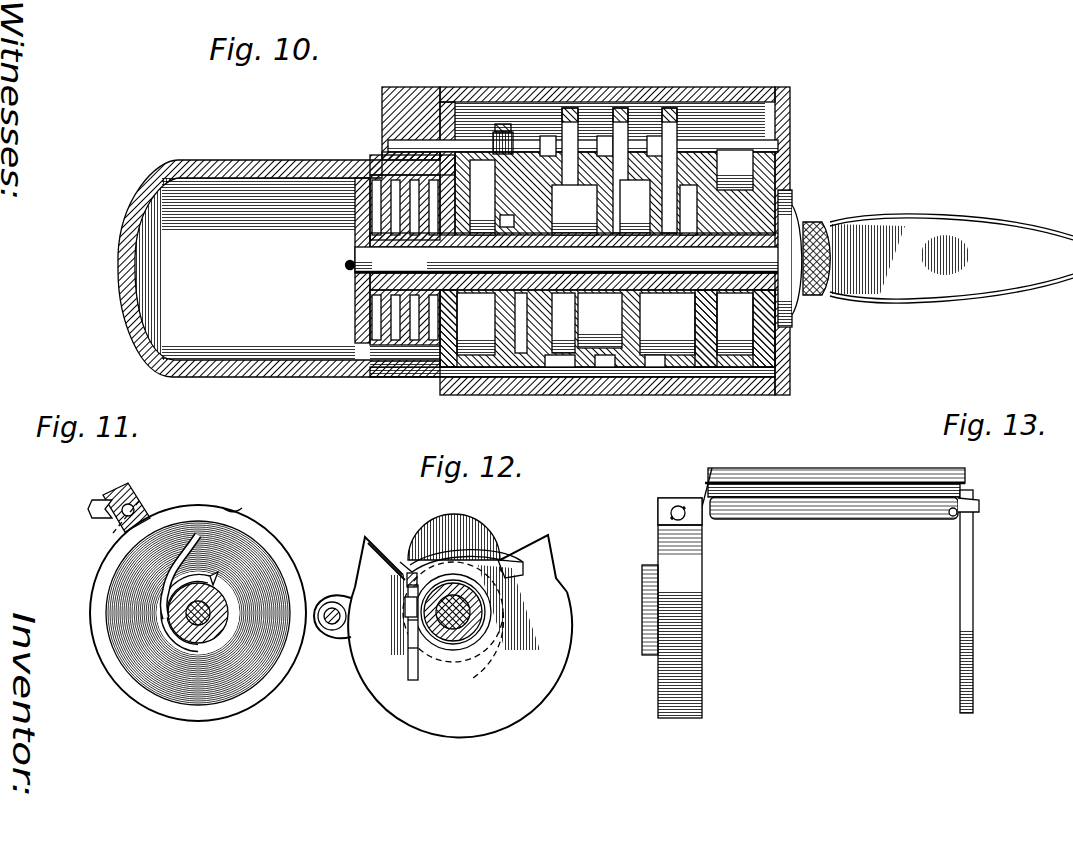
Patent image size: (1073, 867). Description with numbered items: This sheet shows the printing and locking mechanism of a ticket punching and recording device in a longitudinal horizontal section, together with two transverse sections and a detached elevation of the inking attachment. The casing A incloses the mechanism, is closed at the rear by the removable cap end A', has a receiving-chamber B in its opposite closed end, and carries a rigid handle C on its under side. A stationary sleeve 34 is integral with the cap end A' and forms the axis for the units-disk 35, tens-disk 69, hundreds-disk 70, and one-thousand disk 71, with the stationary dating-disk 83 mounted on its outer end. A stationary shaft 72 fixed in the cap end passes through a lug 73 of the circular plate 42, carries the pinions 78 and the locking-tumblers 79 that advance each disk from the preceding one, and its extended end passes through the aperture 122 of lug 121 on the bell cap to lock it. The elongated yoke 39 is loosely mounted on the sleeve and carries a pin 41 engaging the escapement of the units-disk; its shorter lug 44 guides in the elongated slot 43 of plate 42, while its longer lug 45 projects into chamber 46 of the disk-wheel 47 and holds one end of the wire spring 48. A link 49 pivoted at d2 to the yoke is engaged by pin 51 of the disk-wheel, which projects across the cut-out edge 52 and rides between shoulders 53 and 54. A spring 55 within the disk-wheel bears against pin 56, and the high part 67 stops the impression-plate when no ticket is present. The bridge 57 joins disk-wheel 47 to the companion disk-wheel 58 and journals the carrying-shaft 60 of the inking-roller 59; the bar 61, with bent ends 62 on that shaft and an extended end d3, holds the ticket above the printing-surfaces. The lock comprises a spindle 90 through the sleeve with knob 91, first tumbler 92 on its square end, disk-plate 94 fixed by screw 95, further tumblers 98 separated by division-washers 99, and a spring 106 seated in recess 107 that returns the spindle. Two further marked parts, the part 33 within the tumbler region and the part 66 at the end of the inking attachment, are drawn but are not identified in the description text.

In FIG. 10, the shoulder 33 is at (482, 197).
In FIG. 10, the stationary sleeve 34 is at (357, 290).
In FIG. 11, the stationary sleeve 34 is at (213, 628).
In FIG. 12, the stationary sleeve 34 is at (482, 620).
In FIG. 10, the units-disk 35 is at (557, 363).
In FIG. 10, the elongated yoke 39 is at (523, 317).
In FIG. 12, the elongated yoke 39 is at (488, 558).
In FIG. 12, the pin 41 is at (453, 640).
In FIG. 12, the circular plate 42 is at (452, 718).
In FIG. 12, the elongated slot 43 is at (413, 670).
In FIG. 10, the shorter lug 44 is at (494, 225).
In FIG. 12, the shorter lug 44 is at (410, 627).
In FIG. 12, the longer lug 45 is at (407, 582).
In FIG. 10, the chamber 46 is at (488, 345).
In FIG. 11, the chamber 46 is at (148, 673).
In FIG. 10, the disk-wheel 47 is at (435, 378).
In FIG. 11, the disk-wheel 47 is at (227, 713).
In FIG. 13, the disk-wheel 47 is at (692, 667).
In FIG. 10, the wire spring 48 is at (476, 324).
In FIG. 12, the wire spring 48 is at (463, 640).
In FIG. 12, the link 49 is at (520, 560).
In FIG. 11, the pin 51 is at (132, 602).
In FIG. 12, the pin 51 is at (507, 570).
In FIG. 12, the cut-out edge 52 is at (382, 540).
In FIG. 12, the shoulder 53 is at (388, 572).
In FIG. 12, the shoulder 54 is at (530, 552).
In FIG. 11, the spring 55 is at (165, 628).
In FIG. 11, the pin 56 is at (197, 540).
In FIG. 11, the bridge 57 is at (115, 492).
In FIG. 13, the bridge 57 is at (813, 482).
In FIG. 10, the companion disk-wheel 58 is at (760, 372).
In FIG. 13, the companion disk-wheel 58 is at (962, 668).
In FIG. 11, the inking-roller 59 is at (113, 533).
In FIG. 13, the inking-roller 59 is at (847, 520).
In FIG. 11, the carrying-shaft 60 is at (133, 506).
In FIG. 13, the carrying-shaft 60 is at (692, 500).
In FIG. 11, the bar 61 is at (90, 508).
In FIG. 13, the bar 61 is at (798, 498).
In FIG. 11, the bent ends 62 is at (105, 525).
In FIG. 11, the lug 66 is at (98, 518).
In FIG. 13, the lug 66 is at (748, 500).
In FIG. 11, the high part 67 is at (233, 508).
In FIG. 13, the high part 67 is at (670, 500).
In FIG. 10, the tens-disk 69 is at (600, 372).
In FIG. 10, the hundreds-disk 70 is at (653, 365).
In FIG. 10, the one-thousand disk 71 is at (700, 365).
In FIG. 10, the stationary shaft 72 is at (728, 138).
In FIG. 12, the stationary shaft 72 is at (341, 622).
In FIG. 10, the lug 73 is at (505, 122).
In FIG. 12, the lug 73 is at (320, 630).
In FIG. 10, the pinions 78 is at (627, 110).
In FIG. 10, the locking-tumblers 79 is at (568, 110).
In FIG. 10, the dating-disk 83 is at (735, 324).
In FIG. 10, the spindle 90 is at (832, 207).
In FIG. 11, the spindle 90 is at (210, 617).
In FIG. 10, the knob 91 is at (828, 260).
In FIG. 10, the first tumbler 92 is at (353, 362).
In FIG. 10, the disk-plate 94 is at (353, 350).
In FIG. 10, the screw 95 is at (346, 264).
In FIG. 10, the tumblers 98 is at (400, 345).
In FIG. 10, the division-washers 99 is at (405, 279).
In FIG. 10, the spring 106 is at (803, 296).
In FIG. 10, the recess 107 is at (795, 328).
In FIG. 10, the lug 121 is at (420, 87).
In FIG. 10, the aperture 122 is at (402, 130).
In FIG. 10, the casing A is at (551, 241).
In FIG. 10, the removable cap end A' is at (827, 159).
In FIG. 10, the receiving-chamber B is at (279, 268).
In FIG. 10, the rigid handle C is at (957, 227).
In FIG. 12, the pivot d2 is at (410, 562).
In FIG. 13, the extended end d3 is at (979, 508).